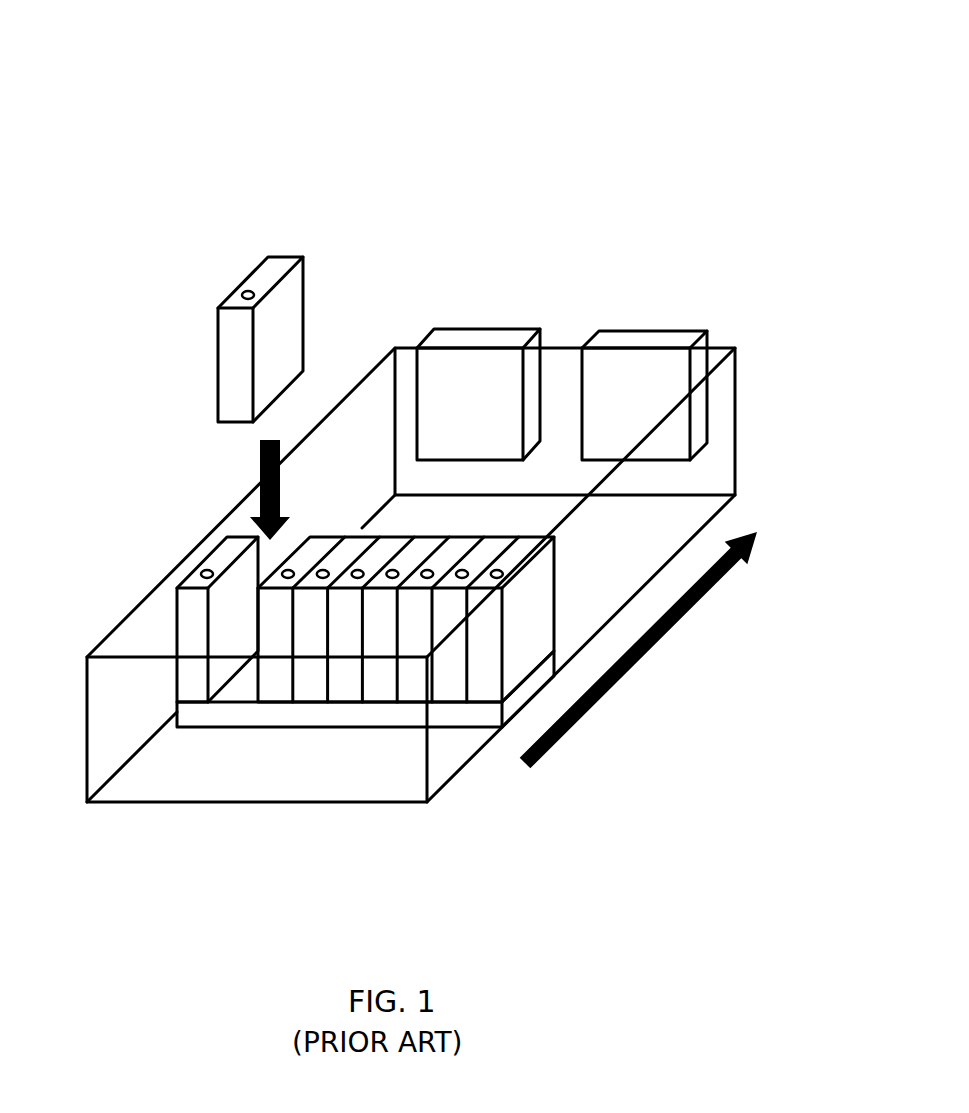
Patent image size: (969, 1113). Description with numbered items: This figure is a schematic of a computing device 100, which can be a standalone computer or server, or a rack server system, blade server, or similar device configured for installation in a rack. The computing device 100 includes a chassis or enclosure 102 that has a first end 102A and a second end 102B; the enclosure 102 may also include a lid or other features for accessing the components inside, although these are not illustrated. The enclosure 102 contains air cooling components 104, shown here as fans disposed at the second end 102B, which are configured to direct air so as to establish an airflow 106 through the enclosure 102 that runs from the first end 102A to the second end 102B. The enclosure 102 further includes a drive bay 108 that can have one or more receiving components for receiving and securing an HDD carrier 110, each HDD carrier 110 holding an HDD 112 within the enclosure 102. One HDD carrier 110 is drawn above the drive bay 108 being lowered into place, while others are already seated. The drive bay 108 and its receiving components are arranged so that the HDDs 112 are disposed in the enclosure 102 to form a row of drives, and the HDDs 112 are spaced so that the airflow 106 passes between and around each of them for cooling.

The computing device 100 is at (367, 90).
The enclosure 102 is at (454, 592).
The first end 102A is at (158, 830).
The second end 102B is at (747, 332).
The air cooling components 104 is at (485, 332).
The airflow 106 is at (638, 650).
The drive bay 108 is at (357, 722).
The HDD carrier 110 is at (304, 457).
The HDD 112 is at (292, 335).